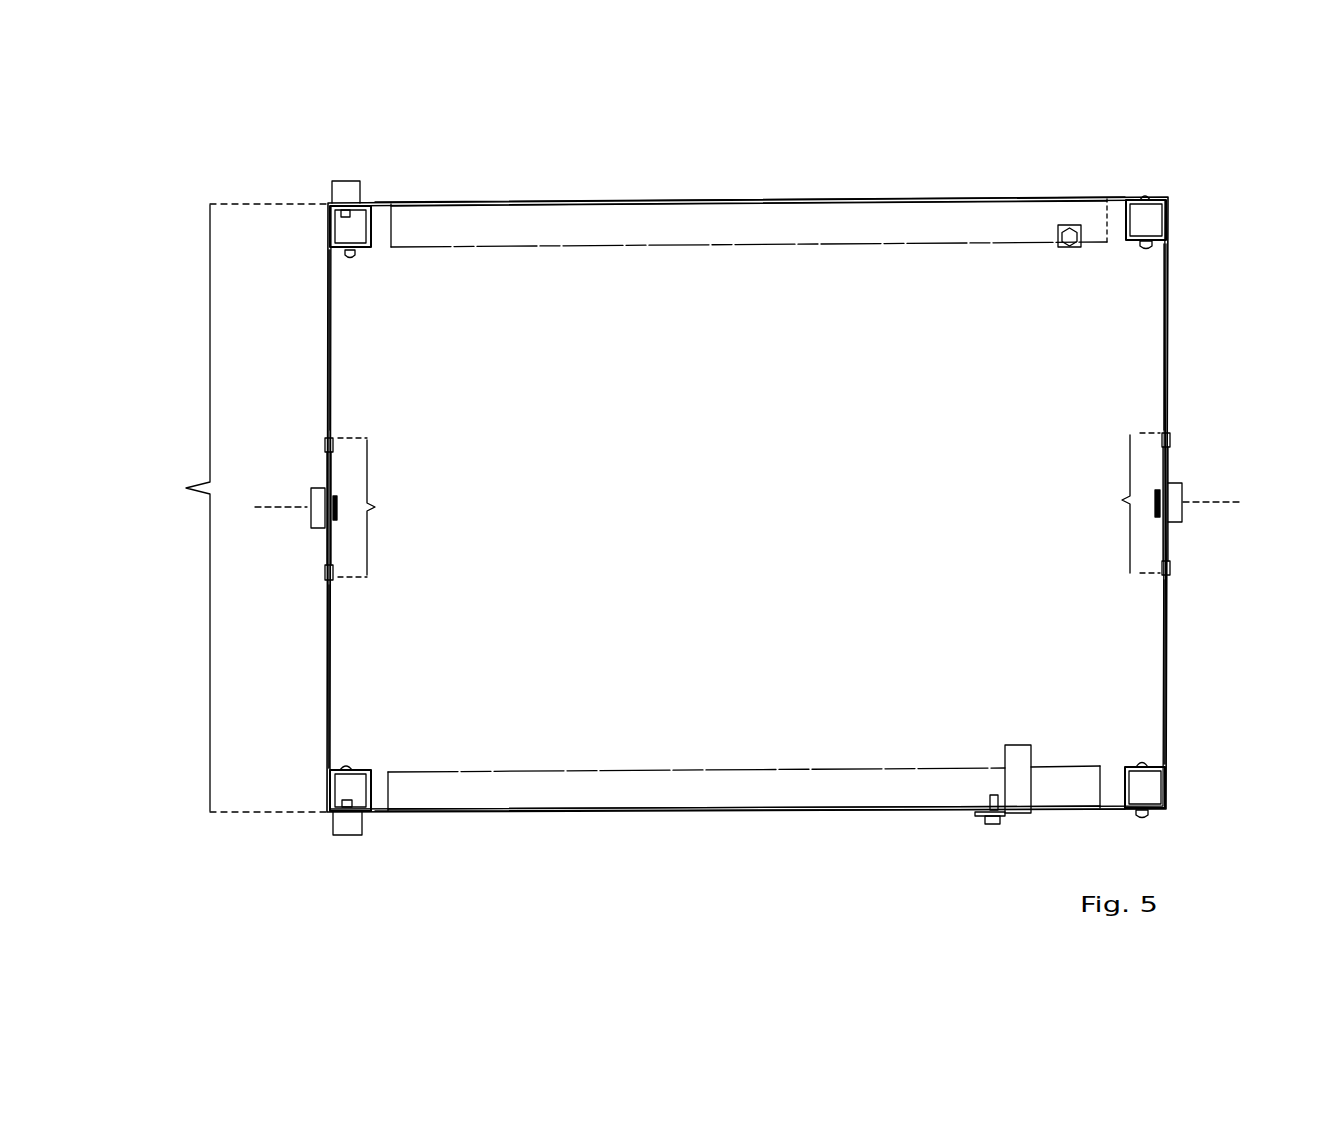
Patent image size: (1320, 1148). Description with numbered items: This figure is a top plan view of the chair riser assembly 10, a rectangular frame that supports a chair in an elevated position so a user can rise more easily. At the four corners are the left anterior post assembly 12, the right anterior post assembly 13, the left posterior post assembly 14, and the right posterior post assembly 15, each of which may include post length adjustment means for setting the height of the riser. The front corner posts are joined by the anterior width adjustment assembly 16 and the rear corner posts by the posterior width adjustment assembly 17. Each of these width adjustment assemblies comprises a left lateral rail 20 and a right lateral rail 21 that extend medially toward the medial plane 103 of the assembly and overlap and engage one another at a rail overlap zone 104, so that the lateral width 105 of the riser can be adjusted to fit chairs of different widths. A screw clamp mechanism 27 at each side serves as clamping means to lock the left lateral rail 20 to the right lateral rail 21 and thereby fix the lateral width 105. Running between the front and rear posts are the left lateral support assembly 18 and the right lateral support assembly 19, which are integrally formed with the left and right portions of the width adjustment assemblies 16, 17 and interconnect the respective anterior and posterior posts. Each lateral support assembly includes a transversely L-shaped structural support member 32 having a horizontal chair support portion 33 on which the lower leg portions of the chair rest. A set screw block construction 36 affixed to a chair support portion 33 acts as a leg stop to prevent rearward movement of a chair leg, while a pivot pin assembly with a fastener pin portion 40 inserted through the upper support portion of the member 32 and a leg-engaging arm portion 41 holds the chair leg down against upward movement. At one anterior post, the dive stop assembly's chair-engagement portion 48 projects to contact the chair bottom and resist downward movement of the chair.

The chair riser assembly 10 is at (1088, 120).
The left anterior post assembly 12 is at (350, 760).
The right anterior post assembly 13 is at (369, 257).
The left posterior post assembly 14 is at (1135, 760).
The right posterior post assembly 15 is at (1135, 262).
The anterior width adjustment assembly 16 is at (345, 409).
The posterior width adjustment assembly 17 is at (1146, 346).
The left lateral support assembly 18 is at (727, 848).
The right lateral support assembly 19 is at (867, 166).
The left lateral rail 20 is at (325, 683).
The right lateral rail 21 is at (325, 326).
The screw clamp mechanism 27 is at (311, 532).
The L-shaped structural support member 32 is at (580, 202).
The chair support portion 33 is at (740, 222).
The set screw block construction 36 is at (1060, 248).
The fastener pin portion 40 is at (995, 822).
The leg-engaging arm portion 41 is at (1020, 752).
The chair-engagement portion 48 is at (355, 183).
The medial plane 103 is at (270, 504).
The rail overlap zone 104 is at (749, 505).
The lateral width 105 is at (237, 508).